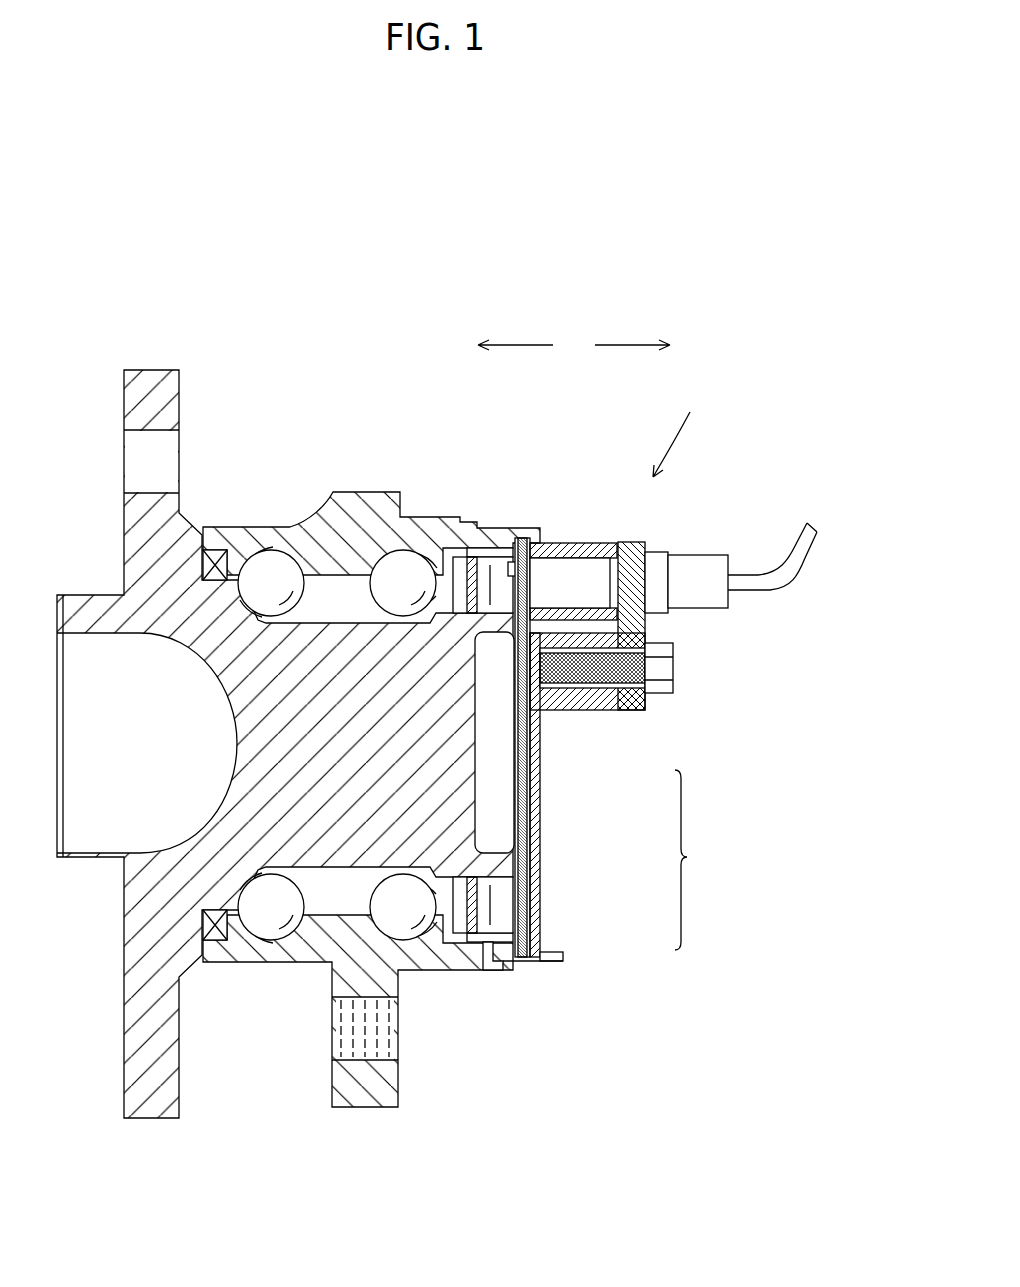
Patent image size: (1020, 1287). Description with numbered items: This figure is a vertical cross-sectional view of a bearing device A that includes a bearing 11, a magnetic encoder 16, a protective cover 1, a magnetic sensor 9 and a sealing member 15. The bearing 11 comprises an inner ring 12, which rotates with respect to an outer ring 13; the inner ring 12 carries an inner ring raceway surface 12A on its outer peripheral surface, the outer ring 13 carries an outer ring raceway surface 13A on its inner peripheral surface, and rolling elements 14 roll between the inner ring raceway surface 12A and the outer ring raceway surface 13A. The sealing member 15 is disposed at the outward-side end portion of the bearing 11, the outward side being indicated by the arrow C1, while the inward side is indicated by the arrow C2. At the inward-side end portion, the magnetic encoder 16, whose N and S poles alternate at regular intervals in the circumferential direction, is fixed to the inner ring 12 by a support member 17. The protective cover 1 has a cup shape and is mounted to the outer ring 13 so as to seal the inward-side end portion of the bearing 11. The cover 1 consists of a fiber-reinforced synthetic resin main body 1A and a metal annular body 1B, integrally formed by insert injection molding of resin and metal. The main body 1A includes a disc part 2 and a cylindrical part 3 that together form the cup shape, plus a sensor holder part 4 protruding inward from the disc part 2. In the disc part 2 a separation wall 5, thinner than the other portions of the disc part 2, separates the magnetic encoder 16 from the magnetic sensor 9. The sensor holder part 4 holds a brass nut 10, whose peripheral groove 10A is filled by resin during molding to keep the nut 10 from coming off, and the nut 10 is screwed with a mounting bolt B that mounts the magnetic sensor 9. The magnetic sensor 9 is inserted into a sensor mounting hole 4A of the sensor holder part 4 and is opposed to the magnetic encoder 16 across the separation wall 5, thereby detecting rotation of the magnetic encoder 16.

The protective cover 1 is at (647, 746).
The main body 1A is at (701, 860).
The metal annular body 1B is at (491, 945).
The disc part 2 is at (553, 860).
The cylindrical part 3 is at (547, 962).
The sensor holder part 4 is at (600, 705).
The sensor mounting hole 4A is at (577, 553).
The separation wall 5 is at (535, 580).
The magnetic sensor 9 is at (700, 562).
The nut 10 is at (587, 715).
The peripheral groove 10A is at (587, 693).
The bearing 11 is at (368, 739).
The inner ring 12 is at (285, 744).
The inner ring raceway surface 12A is at (418, 607).
The outer ring 13 is at (371, 744).
The outer ring raceway surface 13A is at (273, 548).
The rolling elements 14 is at (383, 918).
The sealing member 15 is at (215, 548).
The magnetic encoder 16 is at (514, 566).
The support member 17 is at (485, 545).
The bearing device A is at (678, 429).
The mounting bolt B is at (680, 665).
The outward side direction arrow C1 is at (515, 331).
The inward side direction arrow C2 is at (632, 331).